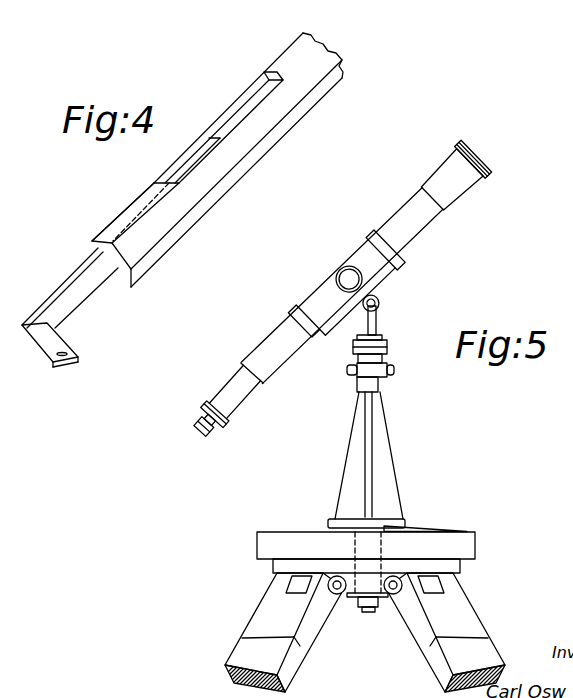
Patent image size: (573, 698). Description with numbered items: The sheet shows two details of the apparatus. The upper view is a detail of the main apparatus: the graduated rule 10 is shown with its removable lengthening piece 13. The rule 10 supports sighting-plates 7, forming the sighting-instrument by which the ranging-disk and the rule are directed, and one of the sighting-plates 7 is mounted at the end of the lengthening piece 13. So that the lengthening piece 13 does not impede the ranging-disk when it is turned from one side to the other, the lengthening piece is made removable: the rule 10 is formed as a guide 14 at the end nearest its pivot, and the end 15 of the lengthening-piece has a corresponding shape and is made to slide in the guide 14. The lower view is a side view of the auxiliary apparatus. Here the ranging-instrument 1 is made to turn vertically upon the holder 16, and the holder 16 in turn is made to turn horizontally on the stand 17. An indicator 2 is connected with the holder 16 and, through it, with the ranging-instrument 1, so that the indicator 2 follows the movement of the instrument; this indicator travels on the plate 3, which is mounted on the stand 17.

In FIG. 4, the graduated rule 10 is at (283, 58).
In FIG. 4, the guide 14 is at (243, 108).
In FIG. 4, the end of the lengthening-piece 15 is at (209, 138).
In FIG. 4, the lengthening piece 13 is at (62, 285).
In FIG. 4, the sighting-plates 7 is at (53, 345).
In FIG. 5, the ranging-instrument 1 is at (416, 231).
In FIG. 5, the holder 16 is at (358, 455).
In FIG. 5, the indicator 2 is at (453, 530).
In FIG. 5, the plate 3 is at (272, 530).
In FIG. 5, the stand 17 is at (467, 618).